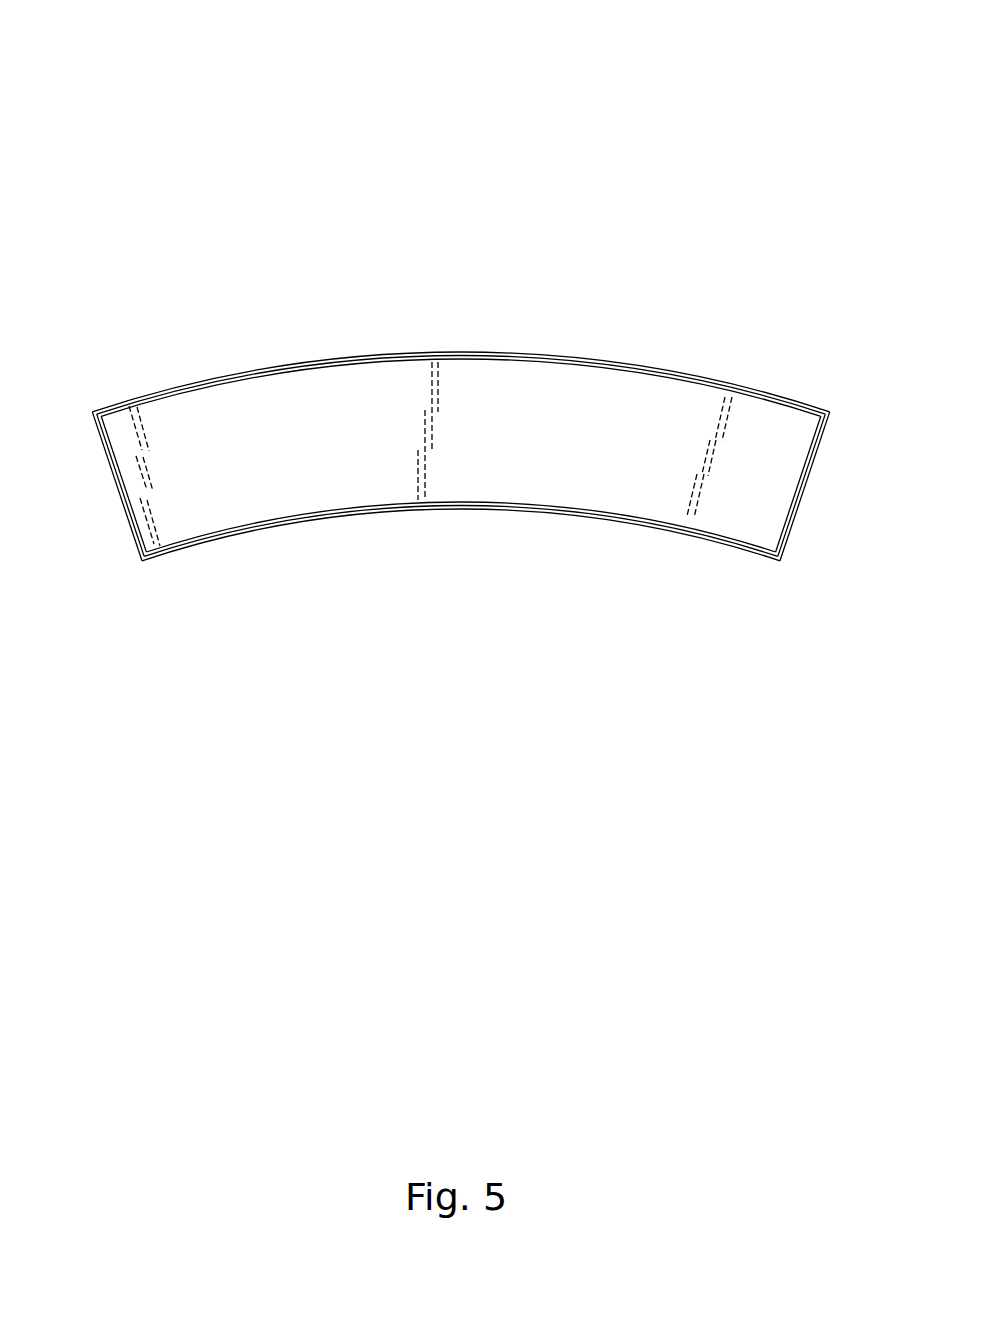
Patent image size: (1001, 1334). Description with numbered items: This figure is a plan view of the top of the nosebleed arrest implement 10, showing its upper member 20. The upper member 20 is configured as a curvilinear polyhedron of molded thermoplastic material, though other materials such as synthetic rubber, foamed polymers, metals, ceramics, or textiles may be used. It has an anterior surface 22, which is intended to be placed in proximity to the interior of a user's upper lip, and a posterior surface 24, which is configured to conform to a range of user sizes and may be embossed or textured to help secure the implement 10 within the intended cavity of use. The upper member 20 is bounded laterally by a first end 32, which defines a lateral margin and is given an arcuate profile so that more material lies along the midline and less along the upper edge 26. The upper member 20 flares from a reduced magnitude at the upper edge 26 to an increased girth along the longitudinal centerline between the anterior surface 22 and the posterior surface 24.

The nosebleed arrest implement 10 is at (172, 137).
The upper member 20 is at (640, 318).
The anterior surface 22 is at (488, 353).
The posterior surface 24 is at (488, 507).
The upper edge 26 is at (283, 392).
The first end 32 is at (783, 560).